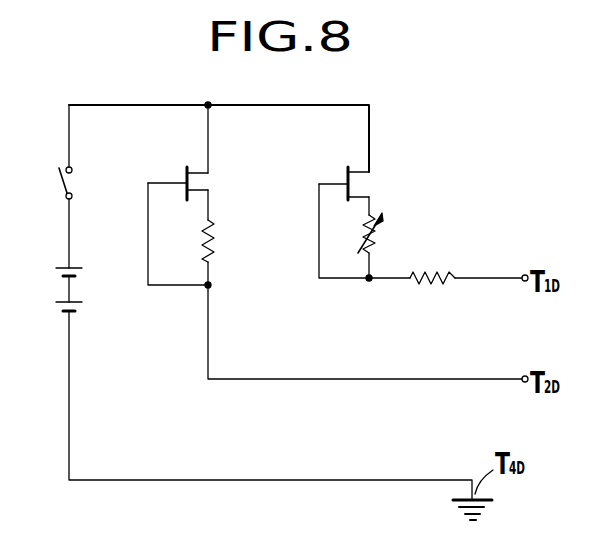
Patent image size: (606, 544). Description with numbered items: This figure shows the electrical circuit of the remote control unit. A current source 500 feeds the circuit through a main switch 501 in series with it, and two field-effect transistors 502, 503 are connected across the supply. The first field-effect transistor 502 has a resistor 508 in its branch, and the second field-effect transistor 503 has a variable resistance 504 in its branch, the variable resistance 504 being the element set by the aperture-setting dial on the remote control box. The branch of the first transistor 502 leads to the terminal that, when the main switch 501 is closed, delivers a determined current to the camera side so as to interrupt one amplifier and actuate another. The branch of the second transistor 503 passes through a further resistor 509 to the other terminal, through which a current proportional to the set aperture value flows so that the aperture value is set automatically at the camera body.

The current source 500 is at (66, 290).
The main switch 501 is at (58, 182).
The field-effect transistor 502 is at (204, 184).
The field-effect transistor 503 is at (357, 186).
The variable resistance 504 is at (378, 241).
The resistor 508 is at (227, 241).
The resistor 509 is at (433, 284).